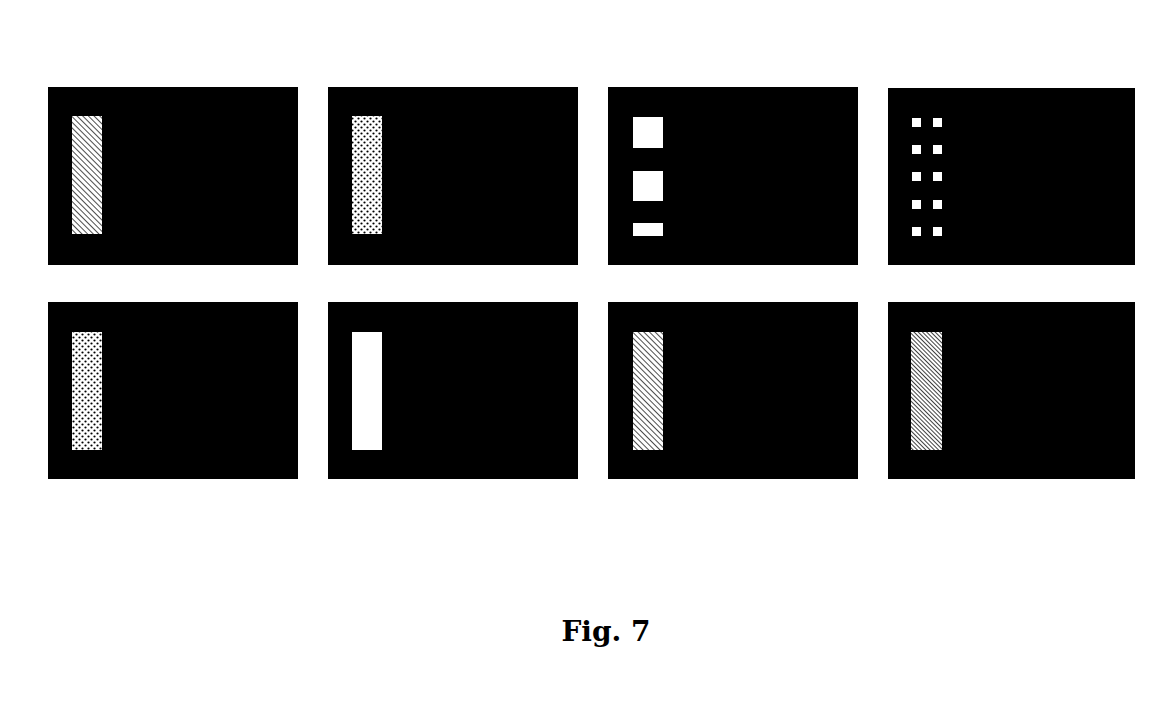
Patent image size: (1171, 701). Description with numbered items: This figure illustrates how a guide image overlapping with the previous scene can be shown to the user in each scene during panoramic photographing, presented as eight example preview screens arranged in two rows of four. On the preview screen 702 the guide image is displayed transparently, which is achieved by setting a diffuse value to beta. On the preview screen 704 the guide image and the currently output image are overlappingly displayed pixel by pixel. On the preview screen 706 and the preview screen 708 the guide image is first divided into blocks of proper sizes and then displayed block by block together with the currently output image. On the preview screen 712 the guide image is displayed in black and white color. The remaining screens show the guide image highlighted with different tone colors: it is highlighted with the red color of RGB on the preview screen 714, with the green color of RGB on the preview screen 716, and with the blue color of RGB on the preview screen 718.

The preview screen 702 is at (173, 87).
The preview screen 704 is at (453, 87).
The preview screen 706 is at (733, 87).
The preview screen 708 is at (1011, 87).
The preview screen 712 is at (176, 480).
The preview screen 714 is at (456, 480).
The preview screen 716 is at (736, 480).
The preview screen 718 is at (1014, 480).